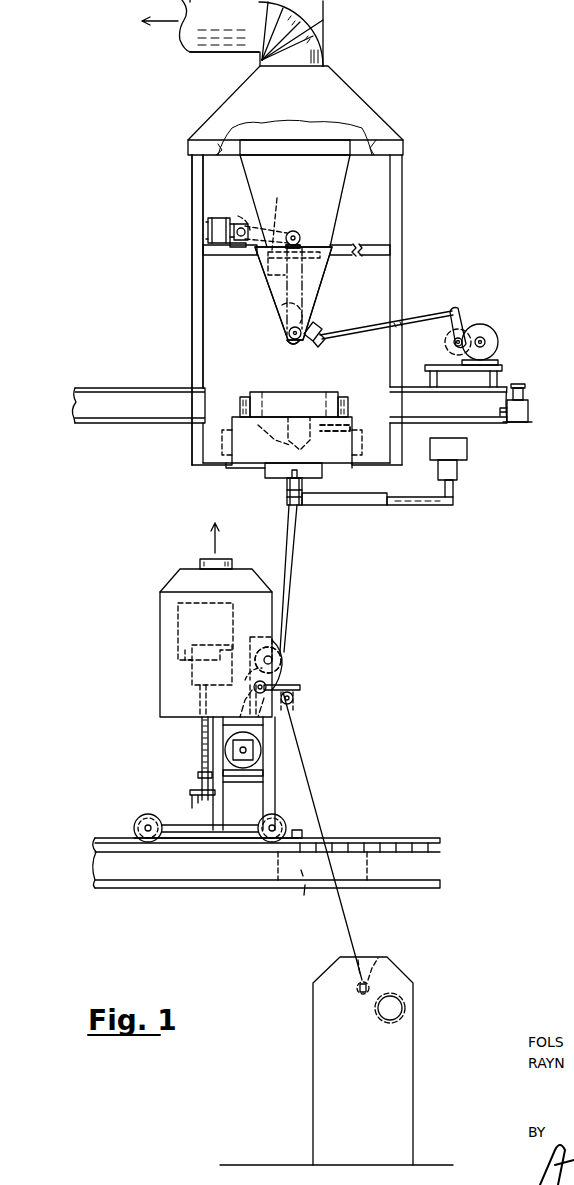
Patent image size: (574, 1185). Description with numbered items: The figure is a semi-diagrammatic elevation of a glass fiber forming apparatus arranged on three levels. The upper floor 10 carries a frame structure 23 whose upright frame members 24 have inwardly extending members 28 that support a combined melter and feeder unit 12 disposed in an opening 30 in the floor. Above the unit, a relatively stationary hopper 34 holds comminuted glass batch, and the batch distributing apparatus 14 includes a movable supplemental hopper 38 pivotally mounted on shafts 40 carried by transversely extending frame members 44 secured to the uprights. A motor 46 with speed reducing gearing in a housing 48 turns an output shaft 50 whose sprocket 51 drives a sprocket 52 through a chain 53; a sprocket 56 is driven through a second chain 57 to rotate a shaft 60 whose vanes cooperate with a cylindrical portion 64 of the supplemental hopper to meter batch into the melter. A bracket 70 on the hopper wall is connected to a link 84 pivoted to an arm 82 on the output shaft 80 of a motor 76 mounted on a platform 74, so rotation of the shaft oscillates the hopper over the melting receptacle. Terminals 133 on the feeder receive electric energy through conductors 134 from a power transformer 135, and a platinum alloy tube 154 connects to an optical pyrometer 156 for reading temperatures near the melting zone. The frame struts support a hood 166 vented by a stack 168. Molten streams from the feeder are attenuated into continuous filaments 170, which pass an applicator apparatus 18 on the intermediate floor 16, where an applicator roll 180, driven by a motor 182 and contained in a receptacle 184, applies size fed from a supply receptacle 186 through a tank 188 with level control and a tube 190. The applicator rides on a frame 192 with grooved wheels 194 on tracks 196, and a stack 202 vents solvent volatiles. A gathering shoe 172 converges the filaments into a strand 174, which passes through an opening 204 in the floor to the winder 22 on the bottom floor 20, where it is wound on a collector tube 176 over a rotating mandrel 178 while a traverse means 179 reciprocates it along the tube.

The upper floor 10 is at (146, 386).
The combined melter and feeder unit 12 is at (354, 386).
The batch distributing apparatus 14 is at (326, 288).
The intermediate floor 16 is at (115, 836).
The applicator apparatus 18 is at (285, 661).
The bottom floor 20 is at (276, 1164).
The winder 22 is at (406, 968).
The frame structure 23 is at (404, 157).
The upright frame members 24 is at (192, 268).
The inwardly extending members 28 is at (224, 452).
The opening 30 is at (234, 396).
The stationary hopper 34 is at (338, 192).
The supplemental hopper 38 is at (272, 292).
The shafts 40 is at (302, 240).
The transversely extending frame members 44 is at (376, 245).
The motor 46 is at (208, 222).
The housing 48 is at (238, 222).
The output shaft 50 is at (240, 247).
The sprocket 51 is at (248, 212).
The sprocket 52 is at (290, 232).
The chain 53 is at (276, 210).
The sprocket 56 is at (282, 305).
The second chain 57 is at (268, 275).
The shaft 60 is at (290, 335).
The cylindrical portion 64 is at (293, 344).
The bracket 70 is at (314, 326).
The platform 74 is at (500, 366).
The motor 76 is at (486, 328).
The output shaft 80 is at (450, 342).
The arm 82 is at (458, 306).
The link 84 is at (436, 312).
The terminals 133 is at (275, 472).
The conductors 134 is at (375, 505).
The power transformer 135 is at (460, 470).
The platinum alloy tube 154 is at (320, 458).
The optical pyrometer 156 is at (530, 411).
The hood 166 is at (228, 99).
The stack 168 is at (224, 55).
The continuous filaments 170 is at (292, 540).
The gathering shoe 172 is at (294, 698).
The strand 174 is at (296, 740).
The collector tube 176 is at (396, 1020).
The mandrel 178 is at (405, 1000).
The traverse means 179 is at (380, 956).
The applicator roll 180 is at (282, 656).
The motor 182 is at (233, 745).
The receptacle 184 is at (276, 636).
The supply receptacle 186 is at (178, 612).
The tank 188 is at (192, 663).
The tube 190 is at (254, 690).
The frame 192 is at (200, 796).
The grooved wheels 194 is at (142, 814).
The tracks 196 is at (134, 836).
The stack 202 is at (200, 564).
The opening 204 is at (301, 897).